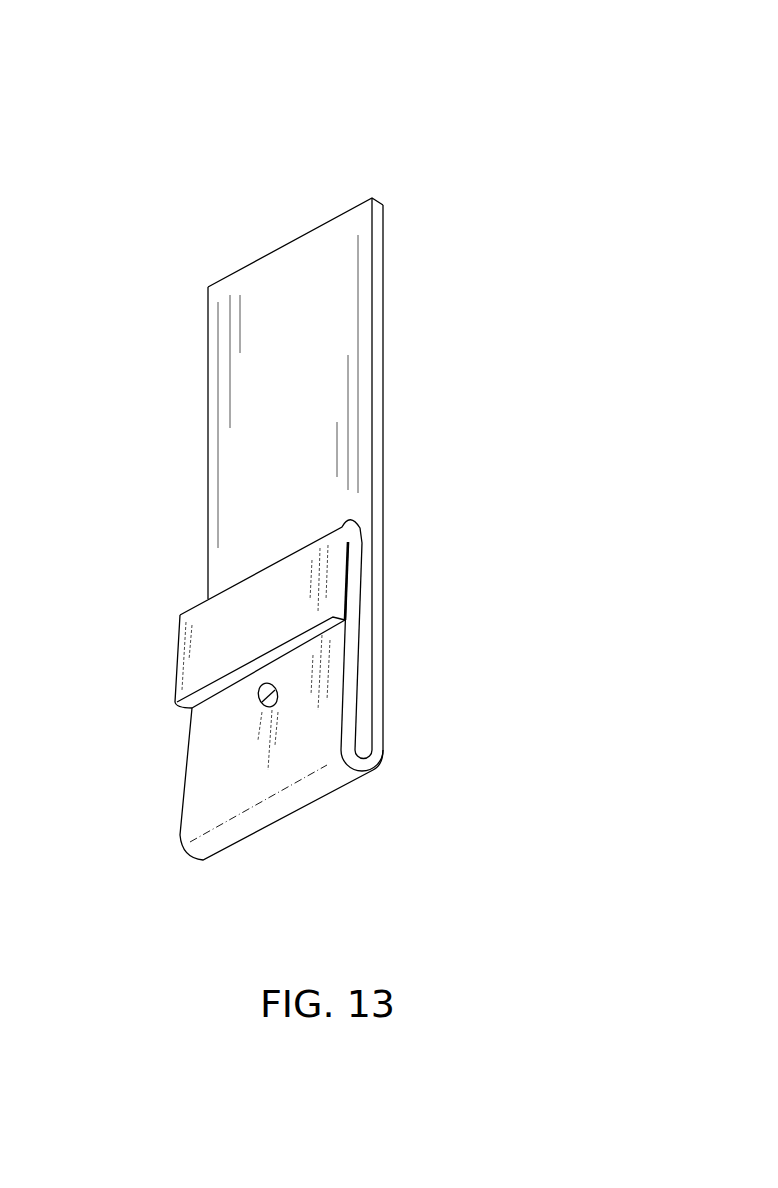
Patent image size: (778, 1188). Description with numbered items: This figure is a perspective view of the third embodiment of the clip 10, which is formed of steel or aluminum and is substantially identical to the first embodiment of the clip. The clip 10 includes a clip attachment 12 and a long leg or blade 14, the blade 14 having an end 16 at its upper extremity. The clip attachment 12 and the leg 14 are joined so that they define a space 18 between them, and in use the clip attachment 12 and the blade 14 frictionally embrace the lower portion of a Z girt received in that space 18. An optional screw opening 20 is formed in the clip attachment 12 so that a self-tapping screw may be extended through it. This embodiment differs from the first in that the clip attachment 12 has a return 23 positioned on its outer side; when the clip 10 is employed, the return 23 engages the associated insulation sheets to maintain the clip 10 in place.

The clip 10 is at (382, 150).
The clip attachment 12 is at (209, 766).
The long leg or blade 14 is at (350, 388).
The end 16 is at (263, 258).
The space 18 is at (362, 723).
The screw opening 20 is at (260, 702).
The return 23 is at (342, 590).